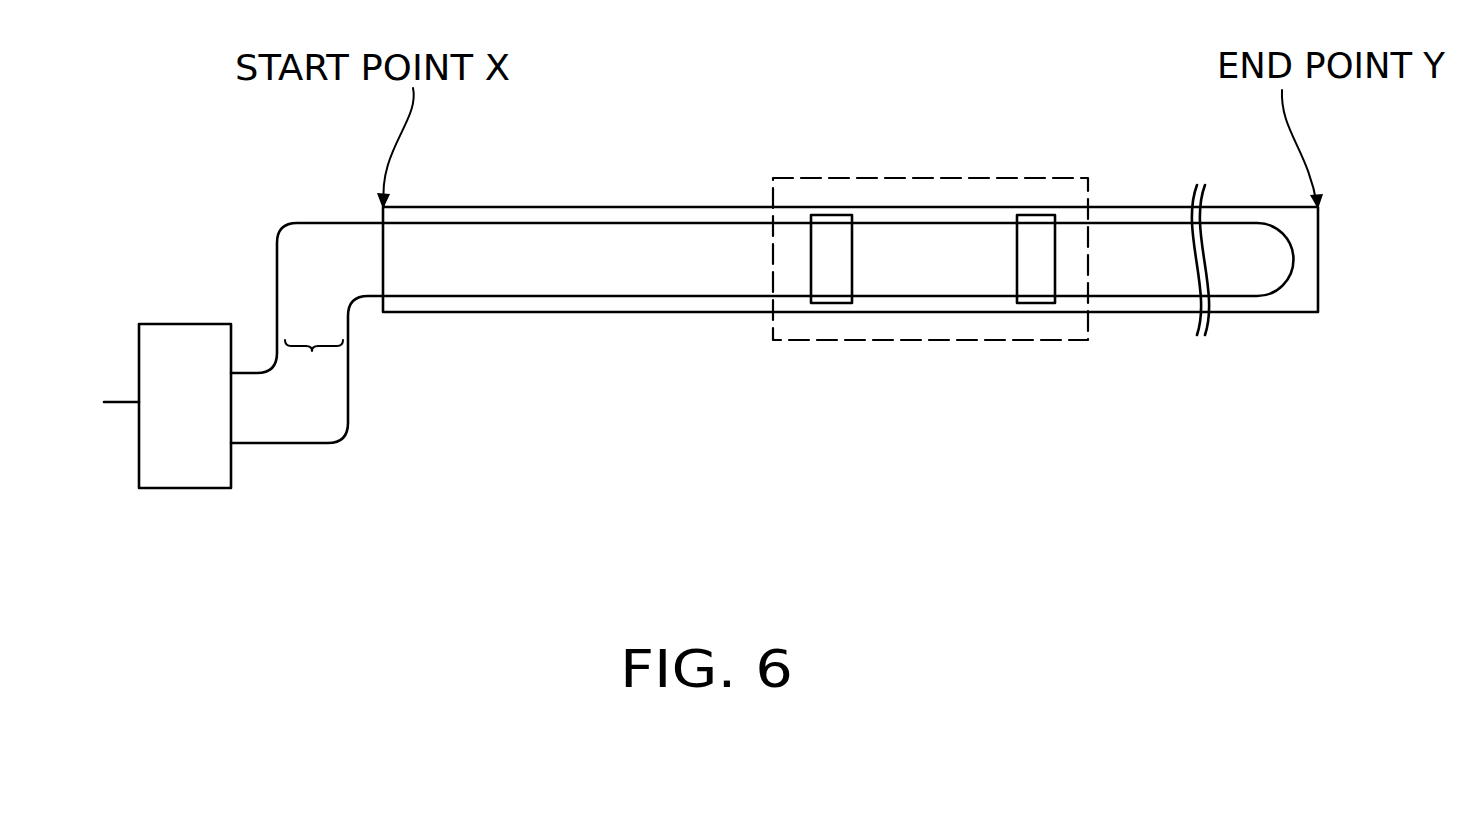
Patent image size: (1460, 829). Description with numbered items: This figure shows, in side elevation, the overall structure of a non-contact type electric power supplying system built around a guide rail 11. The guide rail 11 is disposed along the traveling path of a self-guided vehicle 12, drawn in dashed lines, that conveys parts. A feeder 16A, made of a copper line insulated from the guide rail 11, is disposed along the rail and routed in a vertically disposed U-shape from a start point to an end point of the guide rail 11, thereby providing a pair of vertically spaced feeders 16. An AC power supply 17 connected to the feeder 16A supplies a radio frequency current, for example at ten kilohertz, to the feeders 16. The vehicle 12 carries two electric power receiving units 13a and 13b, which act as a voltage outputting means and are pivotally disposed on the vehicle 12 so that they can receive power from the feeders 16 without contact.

The guide rail 11 is at (558, 207).
The self-guided vehicle 12 is at (878, 323).
The electric power receiving unit 13a is at (815, 274).
The electric power receiving unit 13b is at (1047, 260).
The feeders 16 is at (645, 223).
The feeder 16A is at (314, 367).
The AC power supply 17 is at (193, 473).